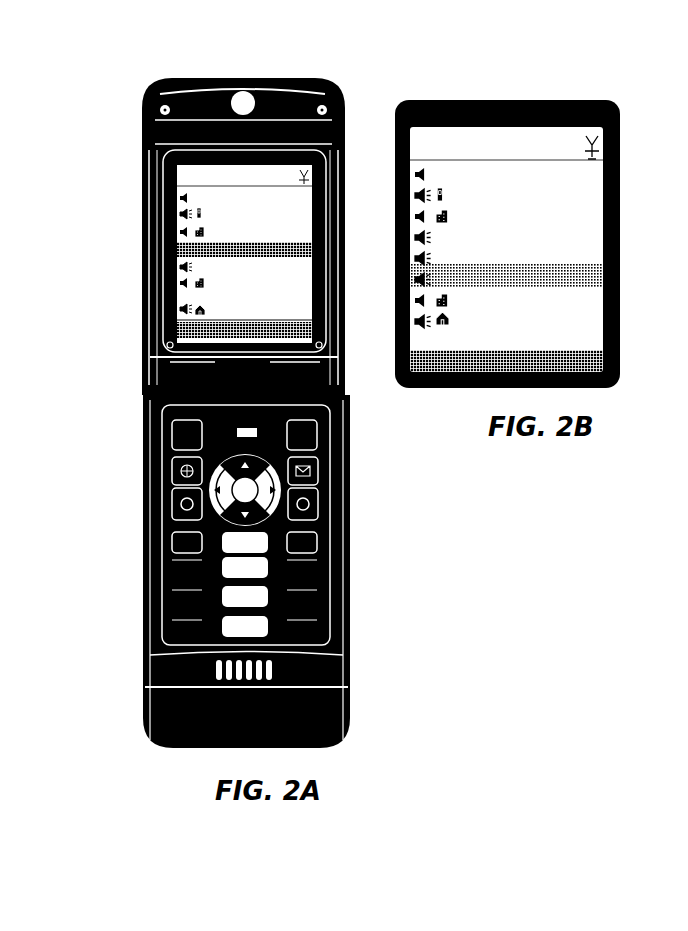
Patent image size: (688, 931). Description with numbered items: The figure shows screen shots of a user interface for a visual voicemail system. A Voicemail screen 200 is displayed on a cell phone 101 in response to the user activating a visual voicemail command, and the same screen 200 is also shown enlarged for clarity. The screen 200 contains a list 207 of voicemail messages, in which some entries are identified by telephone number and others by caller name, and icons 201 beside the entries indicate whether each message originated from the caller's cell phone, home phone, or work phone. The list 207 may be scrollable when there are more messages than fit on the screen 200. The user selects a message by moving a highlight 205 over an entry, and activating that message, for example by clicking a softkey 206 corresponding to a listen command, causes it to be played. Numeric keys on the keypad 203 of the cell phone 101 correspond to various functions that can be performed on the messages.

In FIG. 2A, the cell phone 101 is at (251, 400).
In FIG. 2A, the Voicemail screen 200 is at (214, 223).
In FIG. 2B, the Voicemail screen 200 is at (583, 187).
In FIG. 2B, the icons 201 is at (448, 190).
In FIG. 2A, the keypad 203 is at (347, 545).
In FIG. 2A, the highlight 205 is at (327, 261).
In FIG. 2B, the highlight 205 is at (570, 273).
In FIG. 2A, the softkey 206 is at (347, 423).
In FIG. 2A, the list of voicemail messages 207 is at (121, 174).
In FIG. 2B, the list of voicemail messages 207 is at (533, 161).